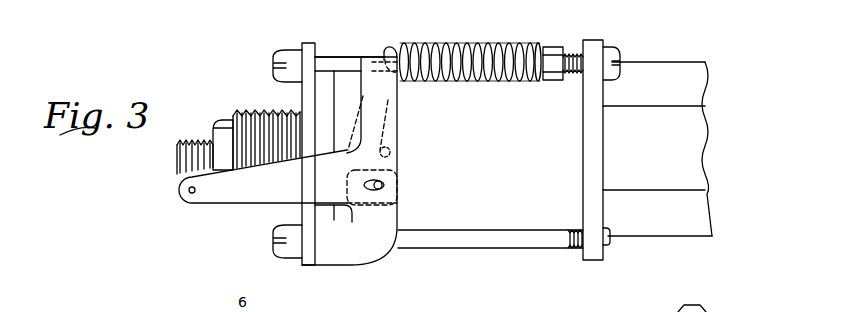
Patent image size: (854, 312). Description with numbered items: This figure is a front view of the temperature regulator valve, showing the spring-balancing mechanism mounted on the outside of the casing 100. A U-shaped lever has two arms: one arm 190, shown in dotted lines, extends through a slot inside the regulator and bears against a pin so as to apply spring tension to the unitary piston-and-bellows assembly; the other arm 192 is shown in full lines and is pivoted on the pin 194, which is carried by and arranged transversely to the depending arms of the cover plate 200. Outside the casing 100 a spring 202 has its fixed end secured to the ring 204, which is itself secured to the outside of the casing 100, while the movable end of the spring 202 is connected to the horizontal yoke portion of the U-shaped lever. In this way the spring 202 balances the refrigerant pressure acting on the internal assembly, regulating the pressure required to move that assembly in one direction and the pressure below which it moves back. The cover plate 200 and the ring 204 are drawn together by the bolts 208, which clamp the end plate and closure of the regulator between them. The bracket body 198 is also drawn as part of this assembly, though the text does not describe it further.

The casing 100 is at (680, 137).
The arm of U-shaped lever 190 is at (387, 127).
The other arm of U-shaped lever 192 is at (370, 82).
The pin 194 is at (386, 187).
The bracket body 198 is at (358, 250).
The cover plate 200 is at (305, 90).
The spring 202 is at (455, 45).
The ring 204 is at (595, 255).
The bolts 208 is at (325, 57).